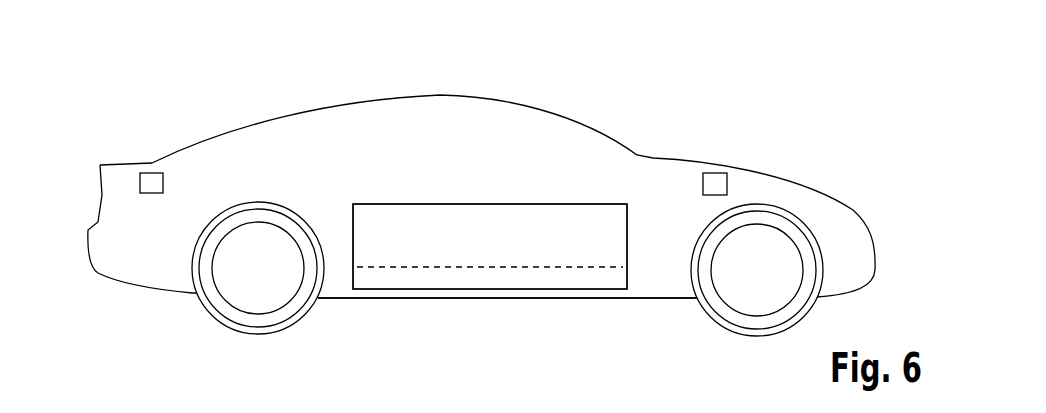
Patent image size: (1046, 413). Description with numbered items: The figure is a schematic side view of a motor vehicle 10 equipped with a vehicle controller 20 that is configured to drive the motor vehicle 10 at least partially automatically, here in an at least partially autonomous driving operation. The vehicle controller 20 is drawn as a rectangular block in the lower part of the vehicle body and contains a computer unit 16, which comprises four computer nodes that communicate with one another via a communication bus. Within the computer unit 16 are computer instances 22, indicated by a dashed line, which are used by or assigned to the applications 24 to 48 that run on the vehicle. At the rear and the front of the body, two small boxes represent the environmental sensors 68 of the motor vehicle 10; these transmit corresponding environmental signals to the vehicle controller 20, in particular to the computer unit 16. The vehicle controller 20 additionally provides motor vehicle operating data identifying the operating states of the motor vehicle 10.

The motor vehicle 10 is at (608, 112).
The computer unit 16 is at (457, 291).
The vehicle controller 20 is at (428, 187).
The computer instances 22 is at (382, 277).
The application 24 is at (490, 212).
The application 48 is at (508, 215).
The environmental sensors 68 is at (150, 172).